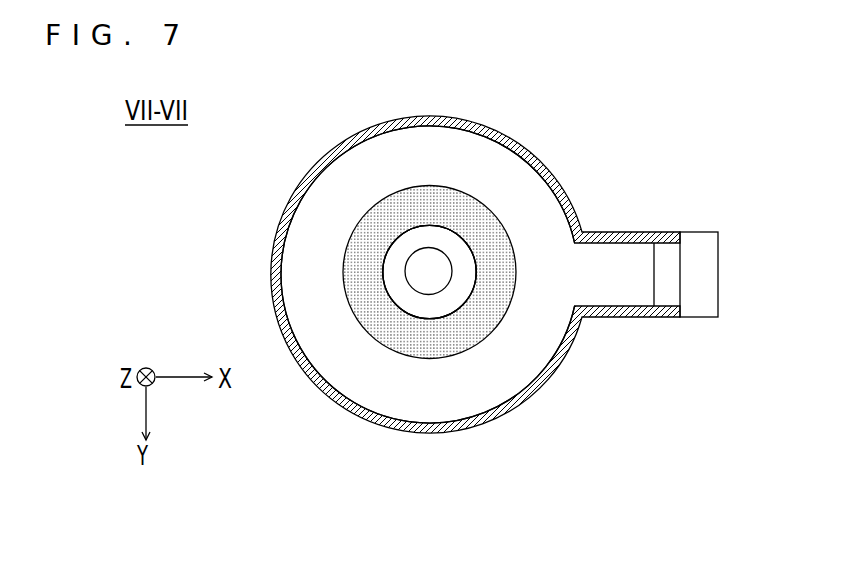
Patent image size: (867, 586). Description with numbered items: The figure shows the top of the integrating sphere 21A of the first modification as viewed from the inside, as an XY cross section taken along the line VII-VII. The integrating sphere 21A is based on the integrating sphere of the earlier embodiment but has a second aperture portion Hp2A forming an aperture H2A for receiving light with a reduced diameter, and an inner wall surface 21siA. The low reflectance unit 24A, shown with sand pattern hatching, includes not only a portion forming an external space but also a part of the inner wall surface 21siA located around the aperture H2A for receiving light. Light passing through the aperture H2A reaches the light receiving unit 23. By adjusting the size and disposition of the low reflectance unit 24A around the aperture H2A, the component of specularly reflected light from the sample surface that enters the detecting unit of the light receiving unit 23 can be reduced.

The integrating sphere 21A is at (278, 230).
The inner wall surface 21siA is at (320, 375).
The low reflectance unit 24A is at (497, 243).
The aperture for receiving light H2A is at (448, 235).
The second aperture portion Hp2A is at (433, 318).
The light receiving unit 23 is at (423, 280).